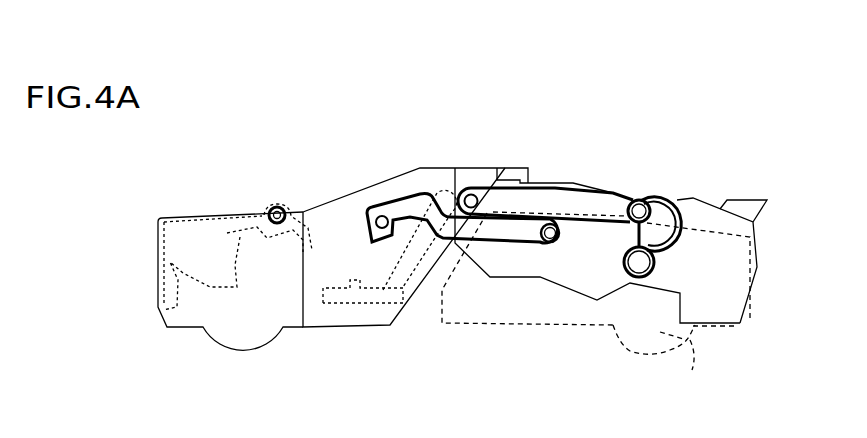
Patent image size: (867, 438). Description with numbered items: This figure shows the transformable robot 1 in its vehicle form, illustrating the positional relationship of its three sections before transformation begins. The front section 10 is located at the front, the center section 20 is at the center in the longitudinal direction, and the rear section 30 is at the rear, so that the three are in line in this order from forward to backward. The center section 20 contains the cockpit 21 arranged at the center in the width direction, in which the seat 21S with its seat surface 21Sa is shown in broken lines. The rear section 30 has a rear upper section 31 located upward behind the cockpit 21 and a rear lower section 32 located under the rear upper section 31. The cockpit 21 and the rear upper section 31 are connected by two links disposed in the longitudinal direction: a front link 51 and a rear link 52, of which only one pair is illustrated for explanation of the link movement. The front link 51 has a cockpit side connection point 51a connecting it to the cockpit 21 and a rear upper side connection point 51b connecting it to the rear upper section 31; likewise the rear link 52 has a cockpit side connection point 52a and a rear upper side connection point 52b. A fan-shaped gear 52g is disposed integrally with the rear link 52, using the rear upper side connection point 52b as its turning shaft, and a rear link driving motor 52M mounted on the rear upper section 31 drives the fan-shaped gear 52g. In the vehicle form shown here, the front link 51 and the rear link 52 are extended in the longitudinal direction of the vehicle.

The transformable robot 1 is at (257, 107).
The front section 10 is at (212, 207).
The center section 20 is at (328, 175).
The cockpit 21 is at (365, 190).
The seat 21S is at (386, 322).
The seat surface 21Sa is at (333, 325).
The rear section 30 is at (716, 172).
The rear upper section 31 is at (723, 227).
The rear lower section 32 is at (692, 370).
The front link 51 is at (490, 247).
The cockpit side connection point 51a is at (393, 227).
The rear upper side connection point 51b is at (545, 243).
The rear link 52 is at (555, 183).
The cockpit side connection point 52a is at (470, 193).
The rear upper side connection point 52b is at (622, 193).
The fan-shaped gear 52g is at (656, 205).
The rear link driving motor 52M is at (652, 252).